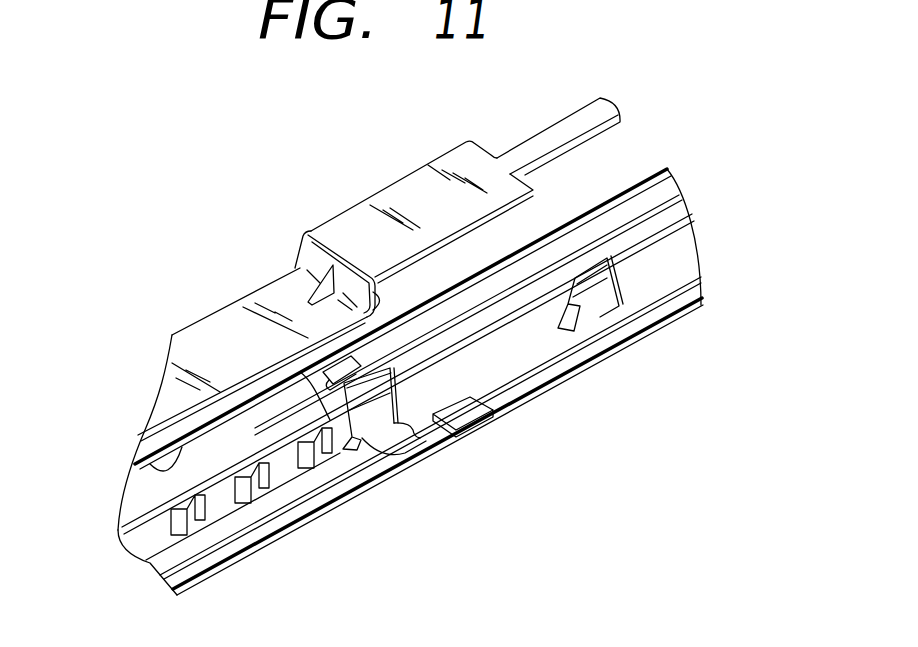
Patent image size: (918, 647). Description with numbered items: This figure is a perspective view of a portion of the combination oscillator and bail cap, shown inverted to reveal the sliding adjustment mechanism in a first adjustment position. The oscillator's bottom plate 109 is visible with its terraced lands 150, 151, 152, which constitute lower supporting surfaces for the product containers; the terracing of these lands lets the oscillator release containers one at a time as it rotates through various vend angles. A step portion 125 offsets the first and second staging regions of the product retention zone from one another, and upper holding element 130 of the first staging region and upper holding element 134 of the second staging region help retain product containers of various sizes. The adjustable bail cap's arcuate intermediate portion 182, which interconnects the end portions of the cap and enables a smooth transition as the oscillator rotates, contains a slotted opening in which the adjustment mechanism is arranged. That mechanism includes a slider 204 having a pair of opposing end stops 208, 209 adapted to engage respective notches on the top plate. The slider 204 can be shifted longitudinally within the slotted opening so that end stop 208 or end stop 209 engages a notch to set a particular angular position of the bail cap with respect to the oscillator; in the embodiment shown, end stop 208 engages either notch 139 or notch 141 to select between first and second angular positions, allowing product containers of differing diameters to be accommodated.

The bottom plate 109 is at (240, 327).
The step portion 125 is at (358, 316).
The upper holding element 130 is at (655, 190).
The upper holding element 134 is at (168, 506).
The notch 139 is at (488, 421).
The notch 141 is at (413, 428).
The terraced land 150 is at (570, 150).
The terraced land 151 is at (432, 255).
The terraced land 152 is at (150, 458).
The arcuate intermediate portion 182 is at (313, 505).
The slider 204 is at (413, 445).
The end stop 208 is at (434, 437).
The end stop 209 is at (307, 392).